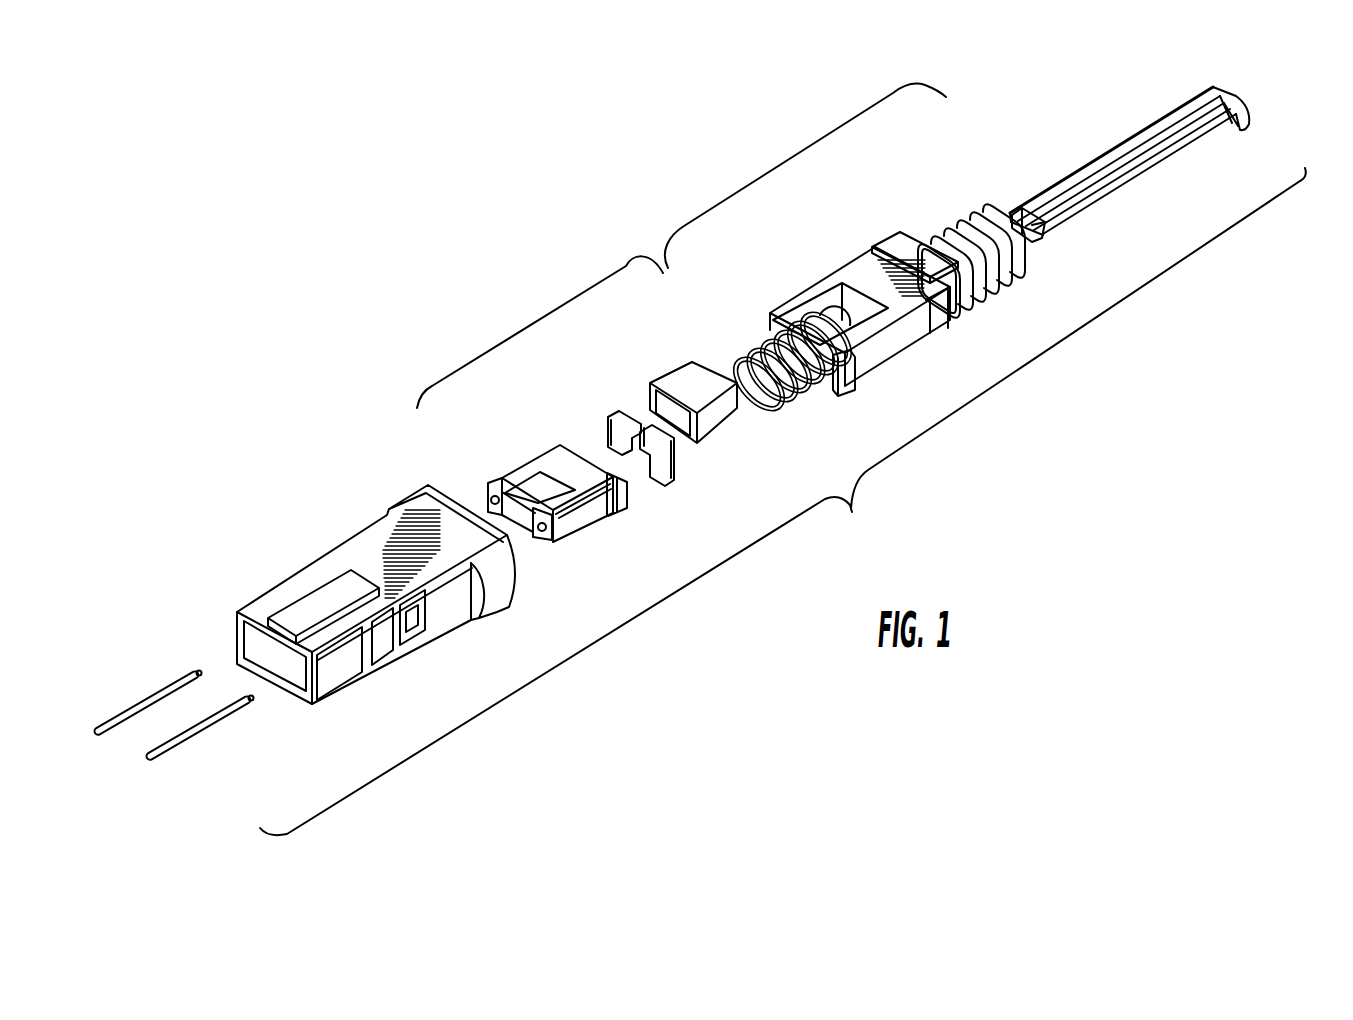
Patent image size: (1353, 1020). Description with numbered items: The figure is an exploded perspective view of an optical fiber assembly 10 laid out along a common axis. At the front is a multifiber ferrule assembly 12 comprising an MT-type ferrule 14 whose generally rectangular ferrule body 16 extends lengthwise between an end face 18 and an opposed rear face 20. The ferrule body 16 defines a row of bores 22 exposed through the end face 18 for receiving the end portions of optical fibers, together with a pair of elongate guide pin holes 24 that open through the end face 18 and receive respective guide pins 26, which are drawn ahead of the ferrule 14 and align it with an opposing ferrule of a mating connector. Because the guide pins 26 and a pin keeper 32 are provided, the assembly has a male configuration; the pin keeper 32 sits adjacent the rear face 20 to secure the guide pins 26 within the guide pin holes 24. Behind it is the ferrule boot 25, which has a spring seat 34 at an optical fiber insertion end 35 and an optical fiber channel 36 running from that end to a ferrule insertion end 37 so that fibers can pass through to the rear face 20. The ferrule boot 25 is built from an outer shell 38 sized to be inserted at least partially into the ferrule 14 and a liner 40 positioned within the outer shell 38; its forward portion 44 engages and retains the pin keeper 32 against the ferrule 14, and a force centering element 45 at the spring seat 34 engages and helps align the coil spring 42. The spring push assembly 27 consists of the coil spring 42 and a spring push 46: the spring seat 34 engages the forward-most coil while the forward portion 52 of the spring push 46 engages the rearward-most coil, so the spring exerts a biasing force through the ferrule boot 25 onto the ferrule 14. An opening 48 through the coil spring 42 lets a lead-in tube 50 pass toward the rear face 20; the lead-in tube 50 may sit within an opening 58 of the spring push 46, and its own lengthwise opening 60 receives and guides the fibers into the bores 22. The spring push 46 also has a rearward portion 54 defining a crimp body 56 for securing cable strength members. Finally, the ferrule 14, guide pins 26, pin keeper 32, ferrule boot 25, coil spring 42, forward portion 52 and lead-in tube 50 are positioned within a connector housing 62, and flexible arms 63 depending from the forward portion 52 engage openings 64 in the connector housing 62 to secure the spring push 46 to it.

The optical fiber assembly 10 is at (783, 501).
The multifiber ferrule assembly 12 is at (543, 316).
The ferrule 14 is at (542, 497).
The ferrule body 16 is at (573, 517).
The end face 18 is at (492, 497).
The rear face 20 is at (585, 445).
The bores 22 is at (525, 527).
The guide pin hole 24 is at (562, 542).
The ferrule boot 25 is at (702, 438).
The guide pin 26 is at (178, 688).
The spring push assembly 27 is at (784, 164).
The pin keeper 32 is at (607, 437).
The spring seat 34 is at (692, 365).
The optical fiber insertion end 35 is at (737, 393).
The optical fiber channel 36 is at (665, 413).
The ferrule insertion end 37 is at (688, 432).
The outer shell 38 is at (717, 420).
The liner 40 is at (685, 438).
The coil spring 42 is at (792, 352).
The forward portion 44 is at (662, 385).
The force centering element 45 is at (706, 393).
The spring push 46 is at (916, 328).
The opening 48 is at (765, 383).
The lead-in tube 50 is at (1158, 178).
The forward portion 52 is at (922, 330).
The rearward portion 54 is at (968, 220).
The crimp body 56 is at (987, 212).
The opening 58 is at (857, 308).
The opening 60 is at (1032, 232).
The connector housing 62 is at (376, 618).
The flexible arms 63 is at (870, 373).
The openings 64 is at (422, 640).